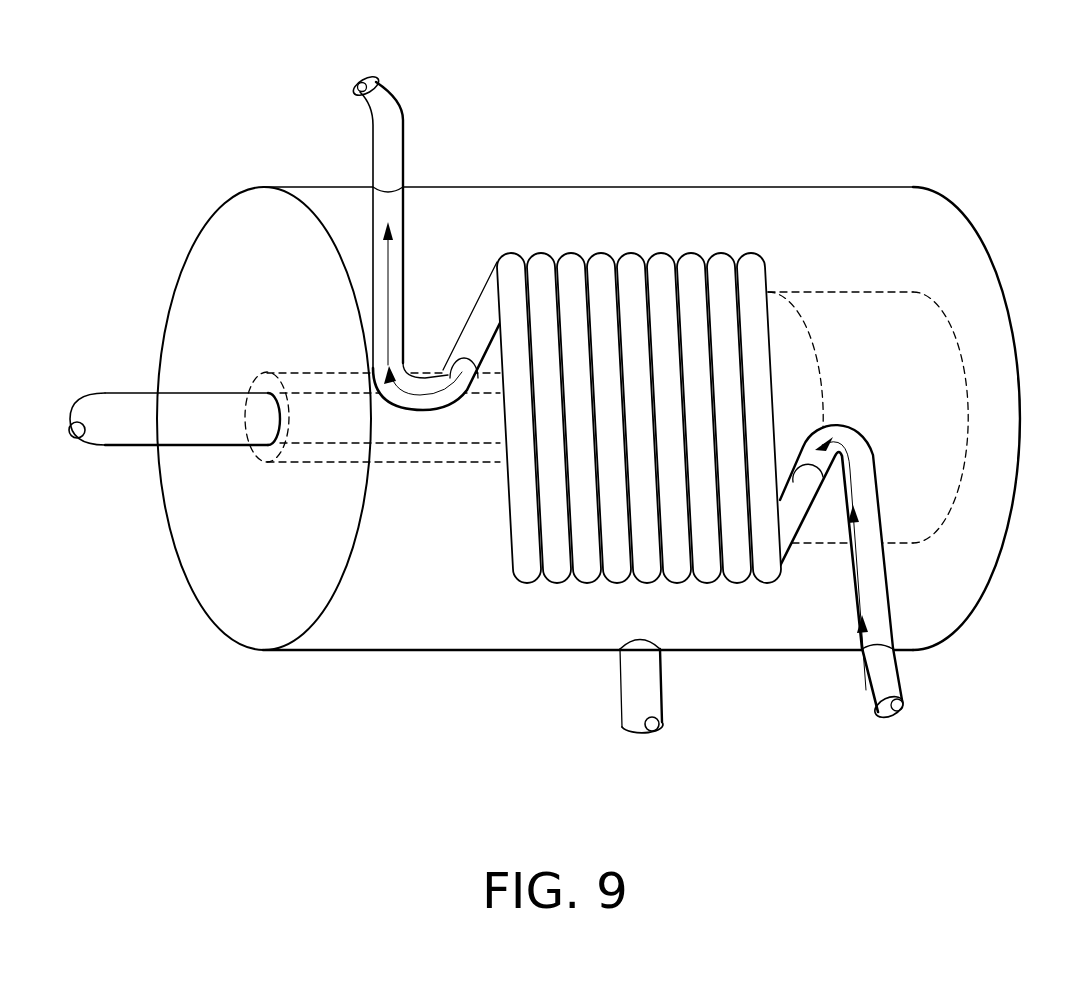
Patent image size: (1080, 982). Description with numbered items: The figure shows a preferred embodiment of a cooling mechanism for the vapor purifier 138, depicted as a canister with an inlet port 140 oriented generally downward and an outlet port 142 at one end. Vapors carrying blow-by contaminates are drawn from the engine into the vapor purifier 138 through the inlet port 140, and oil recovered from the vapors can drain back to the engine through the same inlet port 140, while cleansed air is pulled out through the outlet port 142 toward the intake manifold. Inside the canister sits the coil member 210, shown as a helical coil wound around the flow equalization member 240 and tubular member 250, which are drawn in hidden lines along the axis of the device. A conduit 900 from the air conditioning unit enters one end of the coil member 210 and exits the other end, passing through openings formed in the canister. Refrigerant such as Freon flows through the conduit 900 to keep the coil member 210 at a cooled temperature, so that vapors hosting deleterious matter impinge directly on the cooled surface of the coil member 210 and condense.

The vapor purifier 138 is at (820, 188).
The inlet port 140 is at (620, 687).
The outlet port 142 is at (108, 407).
The coil member 210 is at (542, 277).
The flow equalization member 240 is at (412, 462).
The tubular member 250 is at (468, 462).
The conduit 900 is at (400, 100).